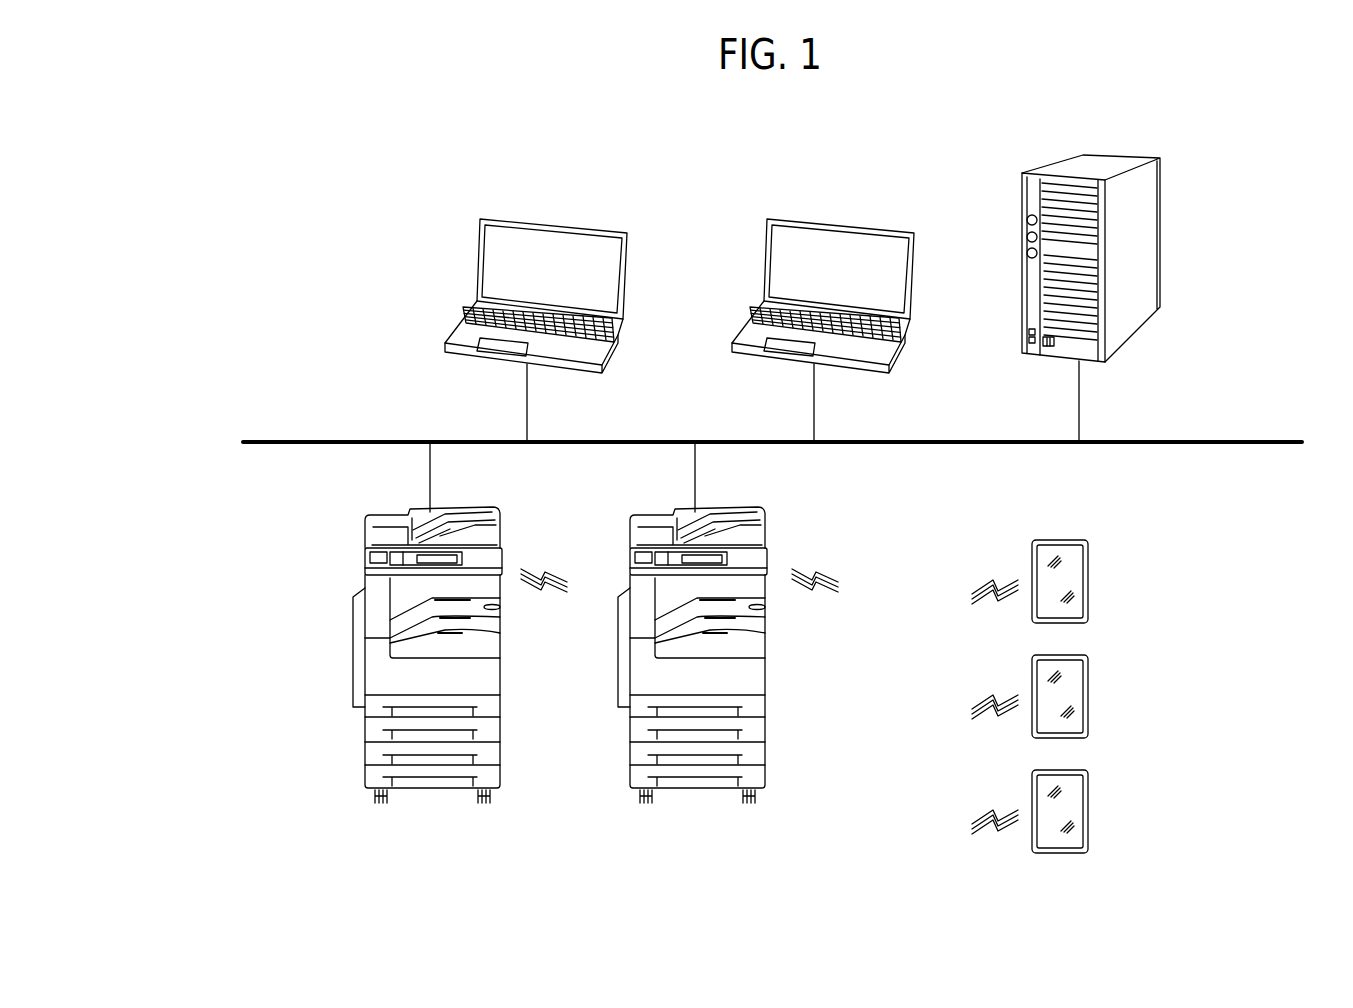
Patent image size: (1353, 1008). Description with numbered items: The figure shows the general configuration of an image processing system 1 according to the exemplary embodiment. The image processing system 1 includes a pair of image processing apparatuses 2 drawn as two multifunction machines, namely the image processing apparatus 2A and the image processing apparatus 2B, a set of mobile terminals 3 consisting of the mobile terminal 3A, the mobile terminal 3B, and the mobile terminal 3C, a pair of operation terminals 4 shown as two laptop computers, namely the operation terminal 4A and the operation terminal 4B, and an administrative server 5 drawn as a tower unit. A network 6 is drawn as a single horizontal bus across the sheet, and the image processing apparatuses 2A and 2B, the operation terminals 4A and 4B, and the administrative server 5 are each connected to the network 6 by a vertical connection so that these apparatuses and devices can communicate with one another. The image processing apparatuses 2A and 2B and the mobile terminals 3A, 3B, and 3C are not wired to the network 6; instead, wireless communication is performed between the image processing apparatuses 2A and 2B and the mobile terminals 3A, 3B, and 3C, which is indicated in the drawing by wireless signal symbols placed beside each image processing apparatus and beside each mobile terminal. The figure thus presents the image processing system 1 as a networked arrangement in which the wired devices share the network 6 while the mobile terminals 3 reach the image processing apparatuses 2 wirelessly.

The image processing system 1 is at (346, 220).
The image processing apparatuses 2 is at (692, 857).
The image processing apparatus 2A is at (456, 800).
The image processing apparatus 2B is at (665, 800).
The mobile terminals 3 is at (1177, 572).
The mobile terminal 3A is at (1090, 578).
The mobile terminal 3B is at (1090, 693).
The mobile terminal 3C is at (1090, 808).
The operation terminals 4 is at (823, 154).
The operation terminal 4A is at (588, 221).
The operation terminal 4B is at (805, 221).
The administrative server 5 is at (1162, 224).
The network 6 is at (1240, 441).